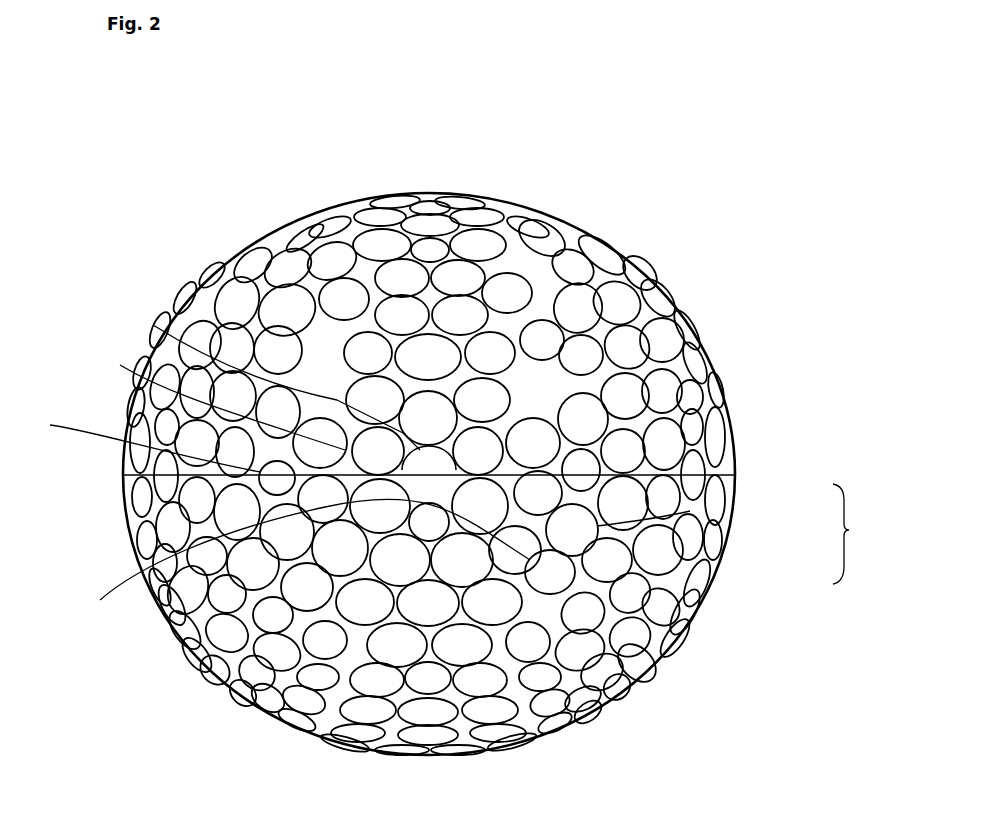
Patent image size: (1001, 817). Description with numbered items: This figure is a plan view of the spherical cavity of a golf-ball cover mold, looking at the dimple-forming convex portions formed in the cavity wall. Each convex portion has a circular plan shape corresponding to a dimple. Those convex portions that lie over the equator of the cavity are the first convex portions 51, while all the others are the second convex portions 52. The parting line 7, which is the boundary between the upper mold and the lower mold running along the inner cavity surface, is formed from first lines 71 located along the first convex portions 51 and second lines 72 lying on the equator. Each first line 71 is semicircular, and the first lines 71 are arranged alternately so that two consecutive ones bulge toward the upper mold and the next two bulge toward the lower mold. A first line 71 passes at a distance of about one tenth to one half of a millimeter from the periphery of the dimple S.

The first convex portion 51 is at (578, 452).
The second convex portion 52 is at (292, 302).
The first line 71 is at (805, 499).
The second line 72 is at (805, 556).
The parting line 7 is at (852, 534).
The dimple S is at (560, 390).